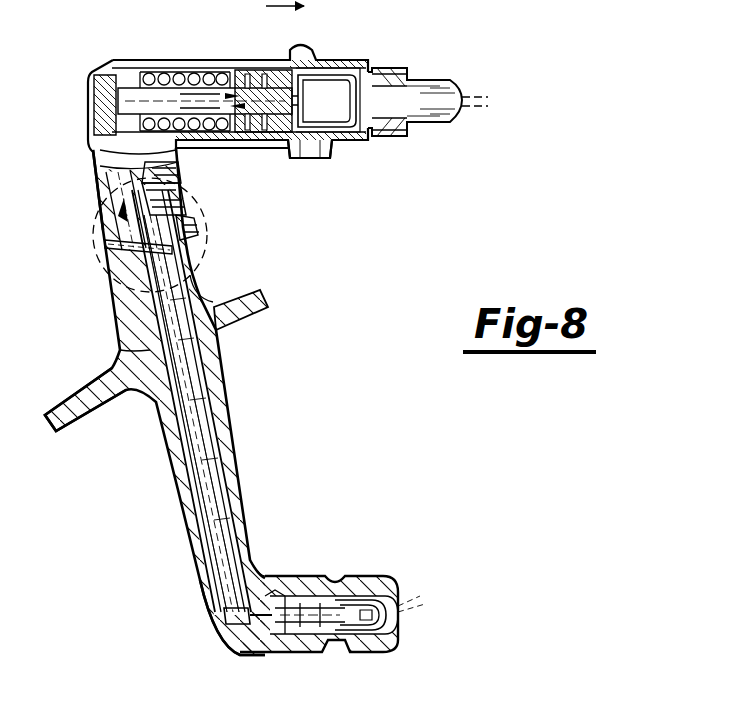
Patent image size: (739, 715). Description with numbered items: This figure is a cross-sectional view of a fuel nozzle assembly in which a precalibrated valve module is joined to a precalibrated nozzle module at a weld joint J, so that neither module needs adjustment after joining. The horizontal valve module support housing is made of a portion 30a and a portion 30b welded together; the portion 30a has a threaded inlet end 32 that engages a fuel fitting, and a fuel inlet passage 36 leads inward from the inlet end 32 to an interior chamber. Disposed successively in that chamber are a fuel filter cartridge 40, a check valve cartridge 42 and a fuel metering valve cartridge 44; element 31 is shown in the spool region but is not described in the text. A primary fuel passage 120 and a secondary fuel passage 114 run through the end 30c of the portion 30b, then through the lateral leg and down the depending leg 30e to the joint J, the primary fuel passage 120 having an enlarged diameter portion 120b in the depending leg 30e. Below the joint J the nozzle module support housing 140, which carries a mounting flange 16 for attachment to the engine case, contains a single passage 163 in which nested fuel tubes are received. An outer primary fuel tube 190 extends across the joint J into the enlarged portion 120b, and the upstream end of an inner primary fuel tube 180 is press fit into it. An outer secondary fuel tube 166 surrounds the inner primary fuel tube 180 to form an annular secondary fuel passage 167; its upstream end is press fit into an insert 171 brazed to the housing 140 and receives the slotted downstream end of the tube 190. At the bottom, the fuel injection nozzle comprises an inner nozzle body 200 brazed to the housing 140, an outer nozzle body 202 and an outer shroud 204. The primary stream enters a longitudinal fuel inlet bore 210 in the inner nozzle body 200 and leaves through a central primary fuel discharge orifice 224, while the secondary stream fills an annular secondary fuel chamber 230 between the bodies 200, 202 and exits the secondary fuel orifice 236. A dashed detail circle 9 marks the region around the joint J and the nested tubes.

The detail circle (FIG. 9 area) 9 is at (204, 216).
The mounting flange 16 is at (268, 303).
The support housing portion 30a is at (302, 84).
The support housing portion 30b is at (165, 60).
The end of housing portion 30c is at (94, 100).
The depending leg 30e is at (100, 172).
The valve spool 31 is at (250, 60).
The threaded inlet end 32 is at (438, 74).
The fuel inlet passage 36 is at (420, 122).
The fuel filter cartridge 40 is at (336, 146).
The check valve cartridge 42 is at (300, 75).
The fuel metering valve cartridge 44 is at (258, 60).
The secondary fuel passage 114 is at (118, 200).
The primary fuel passage 120 is at (176, 157).
The enlarged diameter portion 120b is at (205, 195).
The nozzle module support housing 140 is at (242, 482).
The single passage 163 is at (205, 400).
The outer secondary fuel tube 166 is at (213, 300).
The annular secondary fuel passage 167 is at (215, 445).
The insert 171 is at (122, 278).
The inner primary fuel tube 180 is at (200, 365).
The outer primary fuel tube 190 is at (198, 235).
The inner nozzle body 200 is at (235, 640).
The outer nozzle body 202 is at (332, 580).
The outer shroud 204 is at (365, 578).
The longitudinal fuel inlet bore 210 is at (262, 570).
The central primary fuel discharge orifice 224 is at (398, 615).
The annular secondary fuel chamber 230 is at (275, 592).
The secondary fuel orifice 236 is at (400, 608).
The weld joint J is at (105, 246).